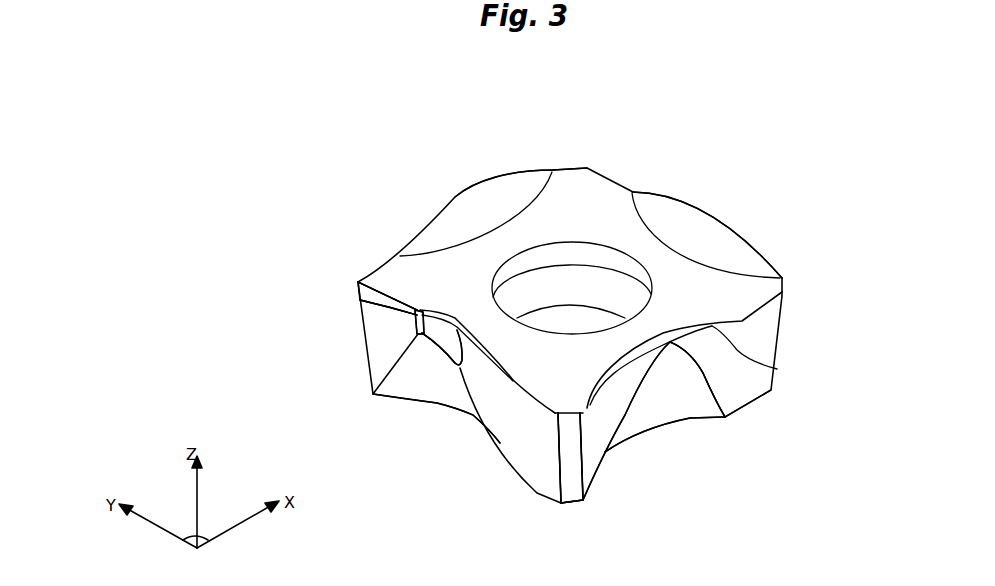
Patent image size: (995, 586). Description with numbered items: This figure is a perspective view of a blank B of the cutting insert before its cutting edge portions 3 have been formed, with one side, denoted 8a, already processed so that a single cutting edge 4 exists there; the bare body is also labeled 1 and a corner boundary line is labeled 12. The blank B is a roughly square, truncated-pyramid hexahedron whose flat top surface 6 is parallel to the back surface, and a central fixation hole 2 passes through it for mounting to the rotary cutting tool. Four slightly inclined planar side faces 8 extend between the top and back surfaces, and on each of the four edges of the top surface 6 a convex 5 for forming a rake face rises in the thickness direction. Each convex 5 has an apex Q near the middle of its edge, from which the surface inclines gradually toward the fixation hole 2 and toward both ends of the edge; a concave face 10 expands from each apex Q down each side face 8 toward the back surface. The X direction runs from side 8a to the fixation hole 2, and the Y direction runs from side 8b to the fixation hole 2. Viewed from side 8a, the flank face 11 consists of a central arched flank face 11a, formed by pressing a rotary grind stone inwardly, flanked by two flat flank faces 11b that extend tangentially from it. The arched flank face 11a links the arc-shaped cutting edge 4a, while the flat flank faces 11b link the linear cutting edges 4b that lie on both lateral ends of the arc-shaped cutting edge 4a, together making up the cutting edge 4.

The cutting insert body 1 is at (770, 323).
The fixation hole 2 is at (620, 296).
The cutting edge portion 3 is at (349, 279).
The cutting edge 4 is at (330, 237).
The arc-shaped cutting edge 4a is at (417, 302).
The linear cutting edge 4b is at (416, 310).
The convex 5 is at (495, 193).
The top surface 6 is at (570, 187).
The side face 8 is at (525, 448).
The side 8a is at (519, 474).
The side 8b is at (756, 391).
The concave face 10 is at (433, 388).
The flank face 11 is at (310, 318).
The arched flank face 11a is at (440, 343).
The flat flank face 11b is at (417, 325).
The boundary line of corner region 12 is at (453, 230).
The blank B is at (767, 220).
The apex Q is at (473, 192).